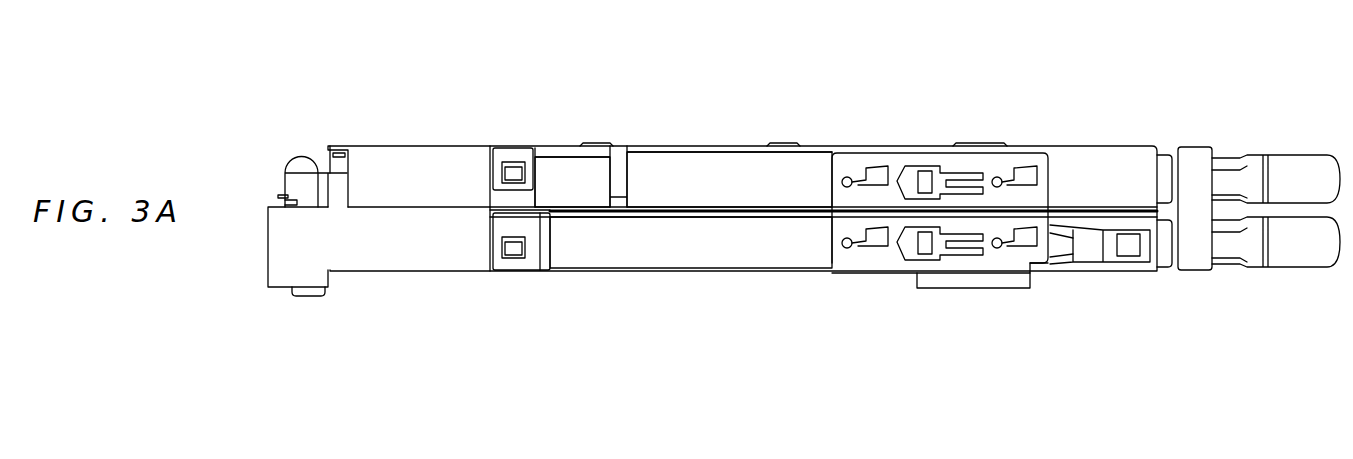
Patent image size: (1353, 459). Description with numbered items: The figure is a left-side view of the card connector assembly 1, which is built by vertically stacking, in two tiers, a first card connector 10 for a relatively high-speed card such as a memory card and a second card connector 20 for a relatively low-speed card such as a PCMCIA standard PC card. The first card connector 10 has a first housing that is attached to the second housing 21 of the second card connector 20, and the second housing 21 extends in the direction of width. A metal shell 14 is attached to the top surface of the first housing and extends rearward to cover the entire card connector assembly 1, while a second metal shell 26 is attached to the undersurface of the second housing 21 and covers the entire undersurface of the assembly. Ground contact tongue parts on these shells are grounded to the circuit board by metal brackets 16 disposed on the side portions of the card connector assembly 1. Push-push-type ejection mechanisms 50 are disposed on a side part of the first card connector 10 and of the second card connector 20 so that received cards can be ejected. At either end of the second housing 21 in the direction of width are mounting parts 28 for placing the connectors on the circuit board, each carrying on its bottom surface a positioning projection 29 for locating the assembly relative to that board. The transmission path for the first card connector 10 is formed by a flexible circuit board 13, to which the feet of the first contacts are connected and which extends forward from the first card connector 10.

The card connector assembly 1 is at (1158, 106).
The first card connector 10 is at (817, 146).
The flexible circuit board (FPC) 13 is at (303, 157).
The metal shell 14 is at (718, 167).
The metal brackets 16 is at (976, 258).
The second card connector 20 is at (815, 276).
The second housing 21 is at (433, 252).
The metal shell 26 is at (713, 255).
The mounting parts 28 is at (285, 255).
The positioning projection 29 is at (307, 298).
The ejection mechanisms 50 is at (1302, 152).